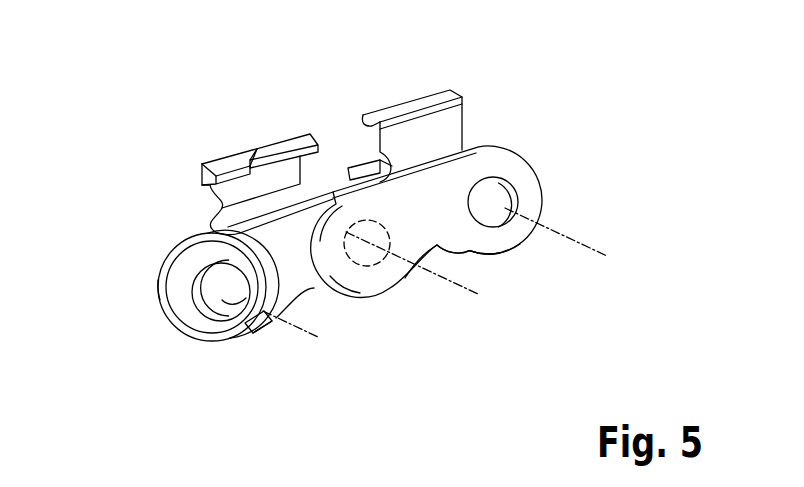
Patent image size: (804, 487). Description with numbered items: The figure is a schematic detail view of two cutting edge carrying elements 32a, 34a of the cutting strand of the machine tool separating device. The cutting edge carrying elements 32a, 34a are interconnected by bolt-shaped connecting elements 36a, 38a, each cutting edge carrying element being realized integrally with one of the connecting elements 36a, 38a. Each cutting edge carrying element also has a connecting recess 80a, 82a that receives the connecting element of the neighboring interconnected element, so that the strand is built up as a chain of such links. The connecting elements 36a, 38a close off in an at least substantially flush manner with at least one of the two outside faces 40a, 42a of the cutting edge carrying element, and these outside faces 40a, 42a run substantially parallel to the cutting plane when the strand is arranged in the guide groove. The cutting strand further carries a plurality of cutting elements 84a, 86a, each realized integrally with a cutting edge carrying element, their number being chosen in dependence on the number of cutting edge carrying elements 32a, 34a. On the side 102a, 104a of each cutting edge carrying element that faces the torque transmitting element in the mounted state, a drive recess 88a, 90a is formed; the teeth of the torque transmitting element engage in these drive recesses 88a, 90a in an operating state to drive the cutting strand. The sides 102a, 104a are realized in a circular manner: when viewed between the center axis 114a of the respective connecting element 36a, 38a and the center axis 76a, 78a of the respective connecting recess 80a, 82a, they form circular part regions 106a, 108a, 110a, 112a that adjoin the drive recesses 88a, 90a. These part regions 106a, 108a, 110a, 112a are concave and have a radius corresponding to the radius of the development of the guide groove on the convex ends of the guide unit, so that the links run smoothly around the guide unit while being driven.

The cutting edge carrying element 32a is at (189, 263).
The cutting edge carrying element 34a is at (497, 160).
The connecting element 36a is at (216, 302).
The connecting element 38a is at (300, 168).
The outside face 40a is at (422, 207).
The outside face 42a is at (158, 289).
The center axis 76a is at (202, 168).
The center axis 78a is at (378, 152).
The connecting recess 80a is at (383, 279).
The connecting recess 82a is at (493, 201).
The cutting element 84a is at (232, 162).
The cutting element 86a is at (382, 108).
The drive recess 88a is at (314, 288).
The drive recess 90a is at (448, 258).
The side 102a is at (253, 347).
The side 104a is at (515, 272).
The part region 106a is at (270, 348).
The part region 108a is at (356, 327).
The part region 110a is at (432, 265).
The part region 112a is at (501, 283).
The center axis 114a is at (158, 261).